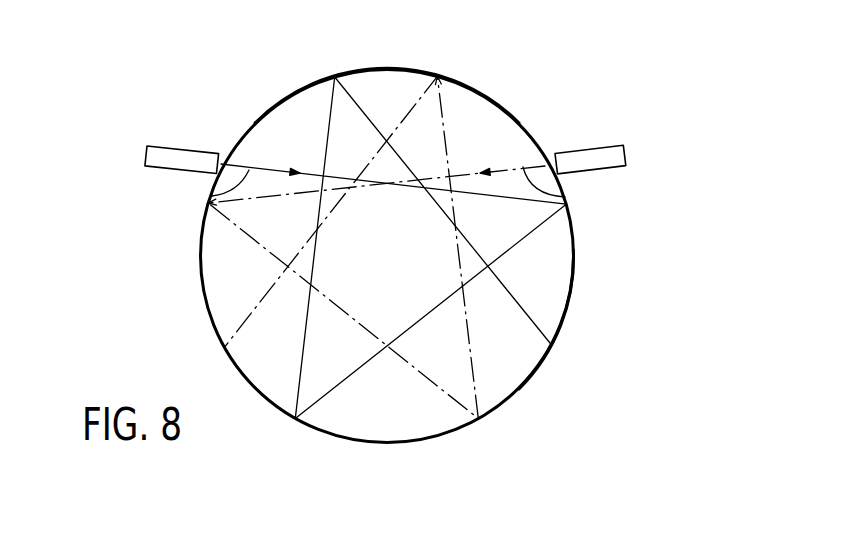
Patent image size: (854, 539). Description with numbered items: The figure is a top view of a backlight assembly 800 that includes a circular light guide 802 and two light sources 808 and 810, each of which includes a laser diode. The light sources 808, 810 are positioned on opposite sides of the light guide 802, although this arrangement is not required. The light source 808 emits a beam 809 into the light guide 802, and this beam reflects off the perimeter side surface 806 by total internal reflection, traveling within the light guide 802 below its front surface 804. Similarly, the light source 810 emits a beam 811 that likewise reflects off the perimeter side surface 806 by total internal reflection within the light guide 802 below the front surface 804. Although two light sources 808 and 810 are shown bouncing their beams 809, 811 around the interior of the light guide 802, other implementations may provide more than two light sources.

The backlight assembly 800 is at (708, 77).
The light guide 802 is at (533, 95).
The front surface 804 is at (541, 268).
The perimeter side surface 806 is at (463, 85).
The light source 808 is at (190, 147).
The beam 809 is at (212, 196).
The light source 810 is at (577, 151).
The beam 811 is at (565, 197).